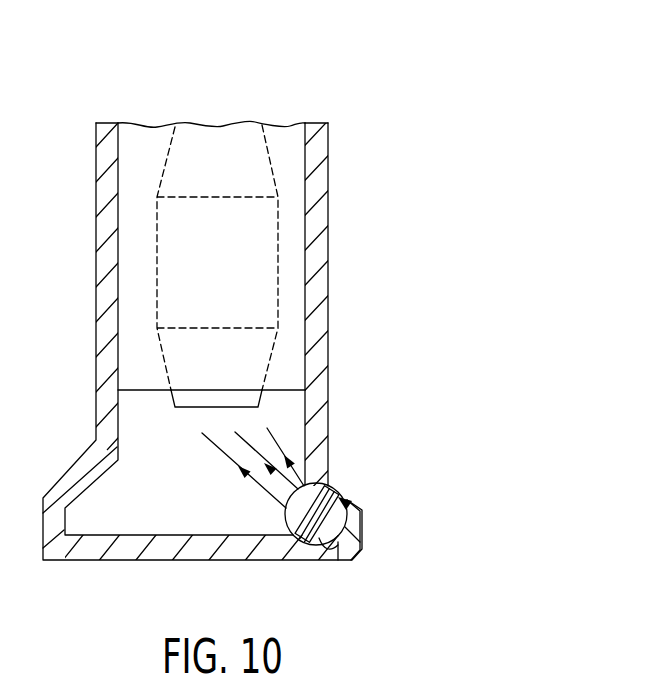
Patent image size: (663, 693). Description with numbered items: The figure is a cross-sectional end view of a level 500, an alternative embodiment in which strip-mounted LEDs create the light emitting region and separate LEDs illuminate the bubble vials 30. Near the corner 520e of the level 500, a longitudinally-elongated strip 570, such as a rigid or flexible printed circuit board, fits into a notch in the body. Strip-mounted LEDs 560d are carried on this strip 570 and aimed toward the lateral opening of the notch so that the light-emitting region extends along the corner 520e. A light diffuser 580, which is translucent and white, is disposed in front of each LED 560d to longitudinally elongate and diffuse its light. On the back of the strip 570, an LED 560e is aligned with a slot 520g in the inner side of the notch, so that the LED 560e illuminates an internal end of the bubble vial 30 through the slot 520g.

The level 500 is at (129, 96).
The bubble vial 30 is at (197, 410).
The slot 520g is at (285, 517).
The LED 560e is at (330, 482).
The light diffuser 580 is at (362, 517).
The corner 520e is at (371, 545).
The longitudinally-elongated strip 570 is at (298, 532).
The strip-mounted LED 560d is at (320, 546).